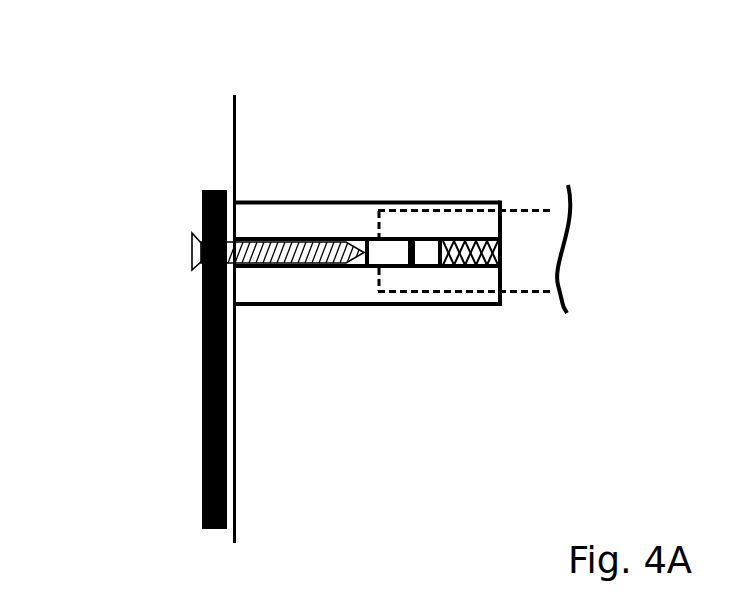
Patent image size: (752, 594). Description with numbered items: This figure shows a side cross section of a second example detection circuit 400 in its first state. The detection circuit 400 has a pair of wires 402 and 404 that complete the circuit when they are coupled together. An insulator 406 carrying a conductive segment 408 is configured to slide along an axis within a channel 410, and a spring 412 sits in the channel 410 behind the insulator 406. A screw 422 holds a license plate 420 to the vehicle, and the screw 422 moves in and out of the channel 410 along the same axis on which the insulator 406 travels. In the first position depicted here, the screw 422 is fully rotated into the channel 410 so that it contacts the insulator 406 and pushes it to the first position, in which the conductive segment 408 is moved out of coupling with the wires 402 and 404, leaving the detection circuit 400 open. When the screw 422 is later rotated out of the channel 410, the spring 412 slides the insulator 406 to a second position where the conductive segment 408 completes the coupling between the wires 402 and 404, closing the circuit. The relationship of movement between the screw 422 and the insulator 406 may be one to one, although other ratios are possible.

The detection circuit 400 is at (136, 86).
The wire 402 is at (553, 209).
The wire 404 is at (540, 293).
The insulator 406 is at (392, 248).
The conductive segment 408 is at (410, 237).
The channel 410 is at (339, 265).
The spring 412 is at (478, 237).
The license plate 420 is at (227, 490).
The screw 422 is at (192, 258).